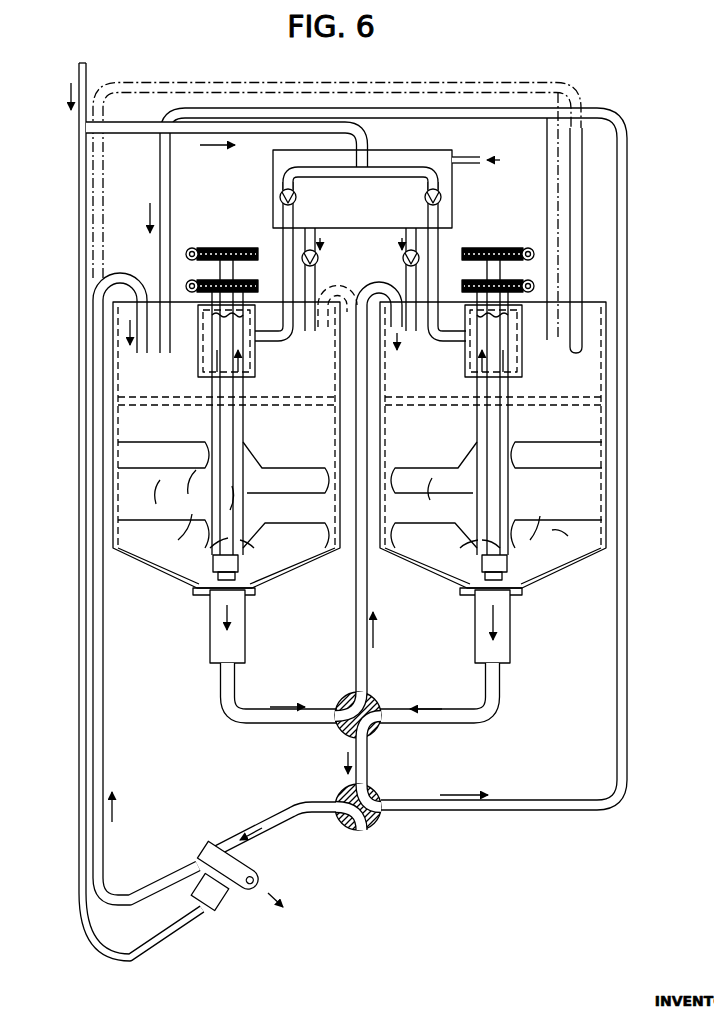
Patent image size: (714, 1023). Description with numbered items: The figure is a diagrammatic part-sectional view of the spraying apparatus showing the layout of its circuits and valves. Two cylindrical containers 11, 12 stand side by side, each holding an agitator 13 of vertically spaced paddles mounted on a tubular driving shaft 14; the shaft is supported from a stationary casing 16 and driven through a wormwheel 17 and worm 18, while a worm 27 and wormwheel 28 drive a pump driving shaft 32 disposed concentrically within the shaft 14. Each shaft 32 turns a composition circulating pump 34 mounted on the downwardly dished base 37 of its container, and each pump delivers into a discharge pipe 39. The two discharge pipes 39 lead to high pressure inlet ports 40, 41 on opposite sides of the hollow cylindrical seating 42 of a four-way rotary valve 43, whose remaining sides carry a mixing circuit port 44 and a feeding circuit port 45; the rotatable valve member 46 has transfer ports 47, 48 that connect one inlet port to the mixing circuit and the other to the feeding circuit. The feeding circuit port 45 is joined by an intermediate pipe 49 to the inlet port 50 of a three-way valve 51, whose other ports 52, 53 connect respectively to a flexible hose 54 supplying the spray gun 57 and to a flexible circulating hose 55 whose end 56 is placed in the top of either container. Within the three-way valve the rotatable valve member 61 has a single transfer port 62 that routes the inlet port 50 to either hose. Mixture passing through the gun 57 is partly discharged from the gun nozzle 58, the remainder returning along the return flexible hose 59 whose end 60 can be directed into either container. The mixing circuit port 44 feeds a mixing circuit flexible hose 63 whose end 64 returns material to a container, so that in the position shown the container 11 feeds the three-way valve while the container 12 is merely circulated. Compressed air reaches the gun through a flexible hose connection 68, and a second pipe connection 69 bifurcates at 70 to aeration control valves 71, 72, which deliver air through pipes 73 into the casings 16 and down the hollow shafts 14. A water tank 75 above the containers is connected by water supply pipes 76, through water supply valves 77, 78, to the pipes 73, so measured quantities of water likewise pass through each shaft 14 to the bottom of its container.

The container 11 is at (118, 424).
The container 12 is at (600, 428).
The agitator 13 is at (285, 472).
The tubular driving shaft 14 is at (244, 424).
The stationary casing 16 is at (256, 370).
The wormwheel 17 is at (248, 282).
The worm 18 is at (190, 281).
The worm 27 is at (192, 248).
The wormwheel 28 is at (226, 247).
The pump driving shaft 32 is at (218, 424).
The composition circulating pump 34 is at (209, 633).
The dished base 37 is at (282, 580).
The discharge pipe 39 is at (228, 709).
The high pressure inlet port 40 is at (342, 722).
The high pressure inlet port 41 is at (378, 712).
The hollow cylindrical seating 42 is at (348, 697).
The 4-way rotary valve 43 is at (352, 748).
The mixing circuit port 44 is at (372, 672).
The feeding circuit port 45 is at (369, 752).
The rotatable valve member 46 is at (385, 733).
The transfer port 47 is at (340, 708).
The transfer port 48 is at (372, 700).
The intermediate pipe 49 is at (372, 768).
The inlet port 50 is at (400, 786).
The 3-way valve 51 is at (372, 832).
The port 52 is at (338, 820).
The port 53 is at (388, 818).
The flexible hose 54 is at (290, 813).
The flexible circulating hose 55 is at (527, 811).
The end of circulating hose 56 is at (166, 350).
The spray gun 57 is at (193, 848).
The gun nozzle 58 is at (252, 888).
The return flexible hose 59 is at (123, 893).
The end of return hose 60 is at (118, 280).
The rotatable valve member 61 is at (350, 832).
The transfer port 62 is at (363, 832).
The mixing circuit flexible hose 63 is at (369, 599).
The end of mixing circuit hose 64 is at (347, 290).
The flexible hose connection 68 is at (78, 228).
The second pipe connection 69 is at (130, 136).
The bifurcation 70 is at (362, 165).
The aeration control valve 71 is at (298, 197).
The aeration valve 72 is at (424, 197).
The pipe 73 is at (283, 242).
The water tank 75 is at (424, 154).
The water supply pipe 76 is at (292, 347).
The water supply valve 77 is at (318, 258).
The water supply valve 78 is at (404, 258).